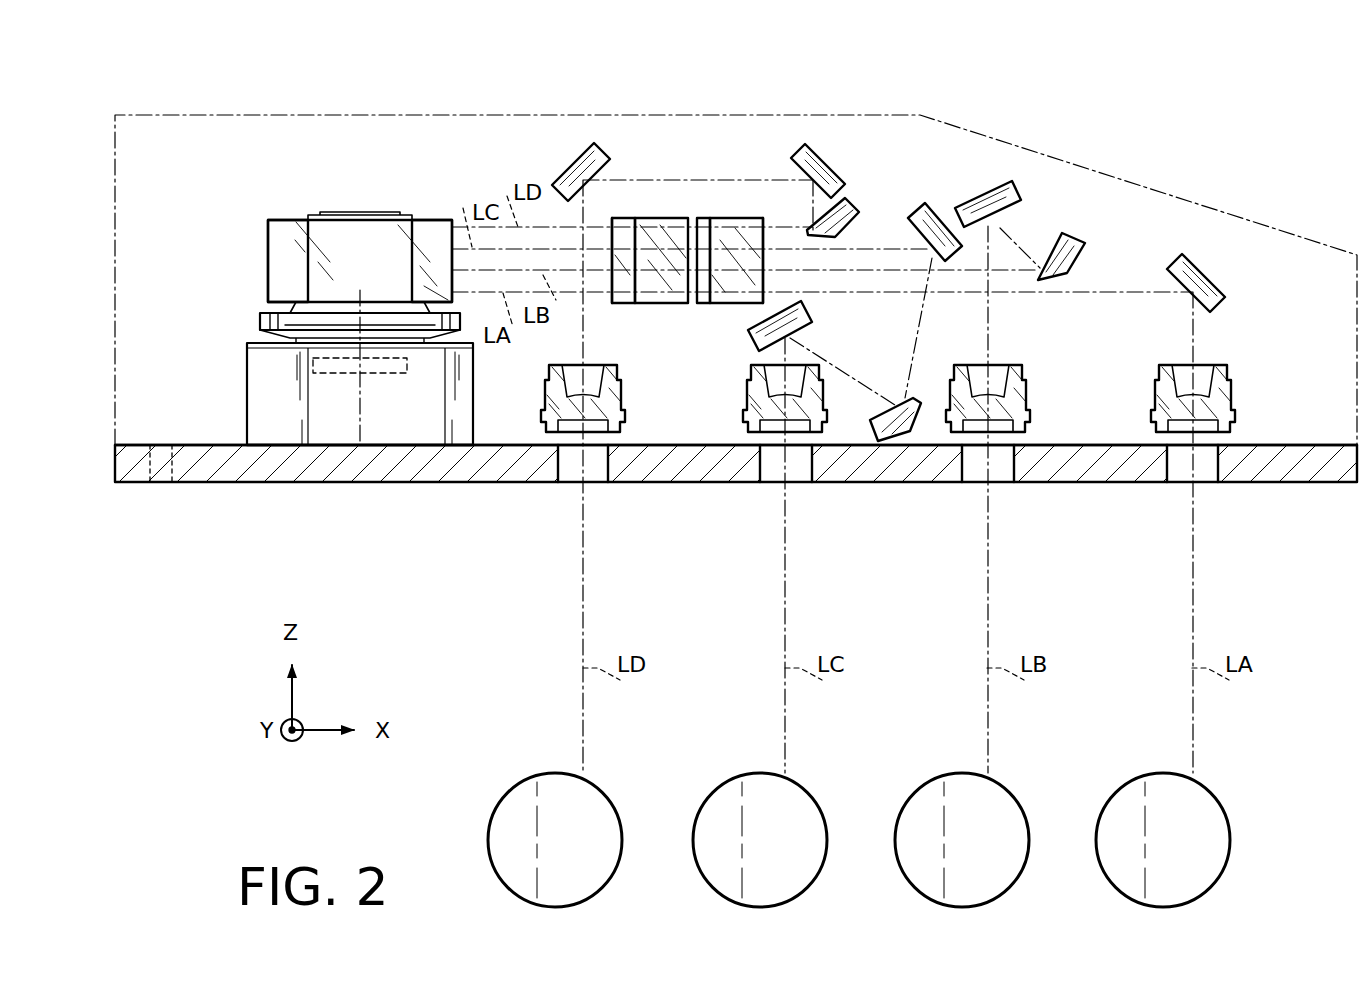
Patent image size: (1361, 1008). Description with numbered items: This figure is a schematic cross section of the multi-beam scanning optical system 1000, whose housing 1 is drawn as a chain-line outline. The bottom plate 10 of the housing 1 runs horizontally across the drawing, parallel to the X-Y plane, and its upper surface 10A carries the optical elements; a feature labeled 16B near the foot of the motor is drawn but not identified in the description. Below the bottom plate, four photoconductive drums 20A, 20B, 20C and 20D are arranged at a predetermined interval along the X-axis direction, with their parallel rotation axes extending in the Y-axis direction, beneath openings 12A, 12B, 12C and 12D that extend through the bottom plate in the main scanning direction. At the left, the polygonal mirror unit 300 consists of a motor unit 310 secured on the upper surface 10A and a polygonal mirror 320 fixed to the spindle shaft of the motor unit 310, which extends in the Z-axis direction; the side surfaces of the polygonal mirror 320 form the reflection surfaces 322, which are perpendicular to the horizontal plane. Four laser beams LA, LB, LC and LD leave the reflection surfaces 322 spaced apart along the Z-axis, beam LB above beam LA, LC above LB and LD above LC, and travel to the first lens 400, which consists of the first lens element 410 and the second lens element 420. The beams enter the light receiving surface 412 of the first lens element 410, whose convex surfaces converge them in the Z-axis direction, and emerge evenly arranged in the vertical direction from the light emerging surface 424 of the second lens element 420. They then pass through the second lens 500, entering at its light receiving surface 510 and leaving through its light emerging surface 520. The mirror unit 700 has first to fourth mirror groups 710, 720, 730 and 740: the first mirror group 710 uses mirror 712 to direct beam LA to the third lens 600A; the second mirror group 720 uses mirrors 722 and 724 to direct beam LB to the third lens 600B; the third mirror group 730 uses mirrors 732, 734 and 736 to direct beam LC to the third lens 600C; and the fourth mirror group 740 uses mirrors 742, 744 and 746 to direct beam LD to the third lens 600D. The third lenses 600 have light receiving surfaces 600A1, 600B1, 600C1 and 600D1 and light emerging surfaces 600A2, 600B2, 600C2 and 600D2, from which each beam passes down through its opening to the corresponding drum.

The housing 1 is at (1043, 139).
The multi-beam scanning optical system 1000 is at (350, 105).
The bottom plate 10 is at (203, 470).
The upper surface 10A is at (188, 412).
The opening 12A is at (1212, 470).
The opening 12B is at (1010, 470).
The opening 12C is at (807, 470).
The opening 12D is at (605, 470).
The mounting portion 16B is at (310, 470).
The photoconductive drum 20A is at (1131, 782).
The photoconductive drum 20B is at (930, 782).
The photoconductive drum 20C is at (728, 782).
The photoconductive drum 20D is at (525, 782).
The polygonal mirror unit 300 is at (208, 220).
The motor unit 310 is at (396, 412).
The polygonal mirror 320 is at (292, 219).
The reflection surfaces 322 is at (437, 228).
The first lens 400 is at (667, 175).
The first lens element 410 is at (622, 218).
The light receiving surface 412 is at (617, 300).
The second lens element 420 is at (667, 218).
The light emerging surface 424 is at (702, 282).
The second lens 500 is at (750, 175).
The light receiving surface 510 is at (690, 238).
The light emerging surface 520 is at (766, 235).
The third lenses 600 is at (1263, 372).
The third lens 600A is at (1136, 424).
The light receiving surface 600A1 is at (1183, 392).
The light emerging surface 600A2 is at (1187, 453).
The third lens 600B is at (936, 423).
The light receiving surface 600B1 is at (1000, 393).
The light emerging surface 600B2 is at (980, 453).
The third lens 600C is at (733, 423).
The light receiving surface 600C1 is at (770, 388).
The light emerging surface 600C2 is at (778, 453).
The third lens 600D is at (530, 423).
The light receiving surface 600D1 is at (593, 394).
The light emerging surface 600D2 is at (575, 453).
The mirror unit 700 is at (1156, 207).
The first mirror group 710 is at (1246, 289).
The mirror 712 is at (1197, 268).
The second mirror group 720 is at (1062, 192).
The mirror 722 is at (1068, 238).
The mirror 724 is at (980, 200).
The third mirror group 730 is at (952, 152).
The mirror 732 is at (923, 218).
The mirror 734 is at (878, 412).
The mirror 736 is at (813, 322).
The fourth mirror group 740 is at (880, 134).
The mirror 742 is at (852, 204).
The mirror 744 is at (825, 163).
The mirror 746 is at (572, 168).